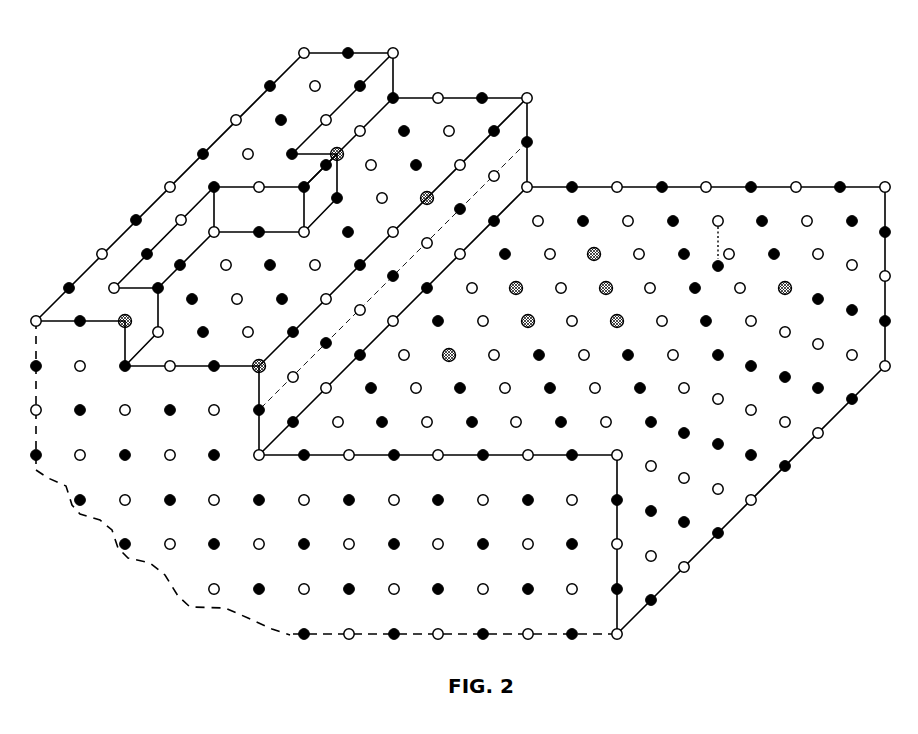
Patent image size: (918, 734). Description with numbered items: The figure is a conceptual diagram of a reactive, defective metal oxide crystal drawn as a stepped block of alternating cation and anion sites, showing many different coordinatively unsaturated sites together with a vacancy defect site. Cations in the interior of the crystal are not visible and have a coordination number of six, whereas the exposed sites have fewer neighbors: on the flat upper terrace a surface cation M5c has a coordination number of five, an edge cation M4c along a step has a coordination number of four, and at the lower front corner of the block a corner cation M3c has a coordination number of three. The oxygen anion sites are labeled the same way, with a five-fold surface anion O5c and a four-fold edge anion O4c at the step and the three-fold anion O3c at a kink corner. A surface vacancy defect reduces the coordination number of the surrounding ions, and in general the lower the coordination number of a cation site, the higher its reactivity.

The three-fold coordinated oxygen anion site O3c is at (297, 181).
The five-fold coordinated oxygen anion site O5c is at (207, 182).
The four-fold coordinated metal cation site M4c is at (174, 215).
The five-fold coordinated metal cation site M5c is at (719, 212).
The three-fold coordinated metal cation site M3c is at (624, 461).
The four-fold coordinated oxygen anion site O4c is at (210, 373).